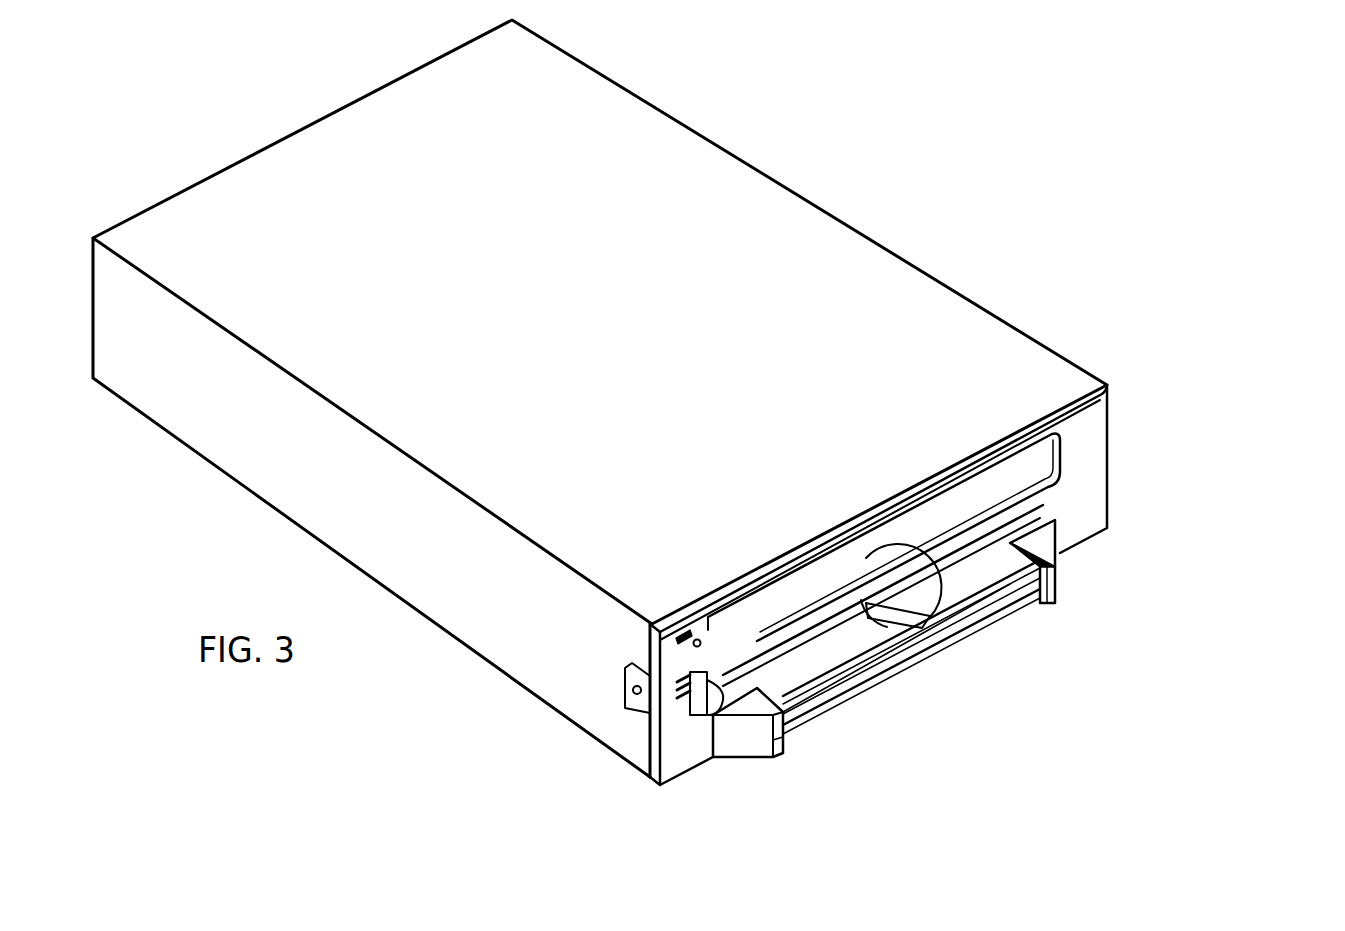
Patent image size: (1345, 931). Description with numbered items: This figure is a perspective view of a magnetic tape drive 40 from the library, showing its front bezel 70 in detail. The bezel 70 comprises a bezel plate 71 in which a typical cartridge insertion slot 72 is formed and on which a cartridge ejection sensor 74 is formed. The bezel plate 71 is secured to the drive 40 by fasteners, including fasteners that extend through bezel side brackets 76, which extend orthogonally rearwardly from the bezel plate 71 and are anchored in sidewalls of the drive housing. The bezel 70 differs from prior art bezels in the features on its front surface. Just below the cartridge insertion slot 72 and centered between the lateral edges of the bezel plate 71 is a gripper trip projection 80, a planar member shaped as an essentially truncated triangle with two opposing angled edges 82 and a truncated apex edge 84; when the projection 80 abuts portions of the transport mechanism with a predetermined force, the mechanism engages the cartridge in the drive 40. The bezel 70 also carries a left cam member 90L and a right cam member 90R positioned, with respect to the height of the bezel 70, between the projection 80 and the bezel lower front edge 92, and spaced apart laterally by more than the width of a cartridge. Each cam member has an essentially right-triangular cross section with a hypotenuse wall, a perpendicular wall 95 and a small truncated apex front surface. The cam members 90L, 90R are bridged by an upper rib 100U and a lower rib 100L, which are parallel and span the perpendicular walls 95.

The drive 40 is at (865, 237).
The bezel 70 is at (1250, 340).
The bezel plate 71 is at (975, 456).
The cartridge insertion slot 72 is at (1062, 470).
The cartridge ejection sensor 74 is at (716, 672).
The bezel side brackets 76 is at (627, 690).
The gripper trip projection 80 is at (895, 634).
The angled edges 82 is at (868, 632).
The truncated apex edge 84 is at (928, 618).
The left cam member 90L is at (771, 775).
The right cam member 90R is at (1095, 576).
The bezel lower front edge 92 is at (683, 773).
The perpendicular wall 95 is at (790, 690).
The upper rib 100U is at (957, 593).
The lower rib 100L is at (1023, 612).